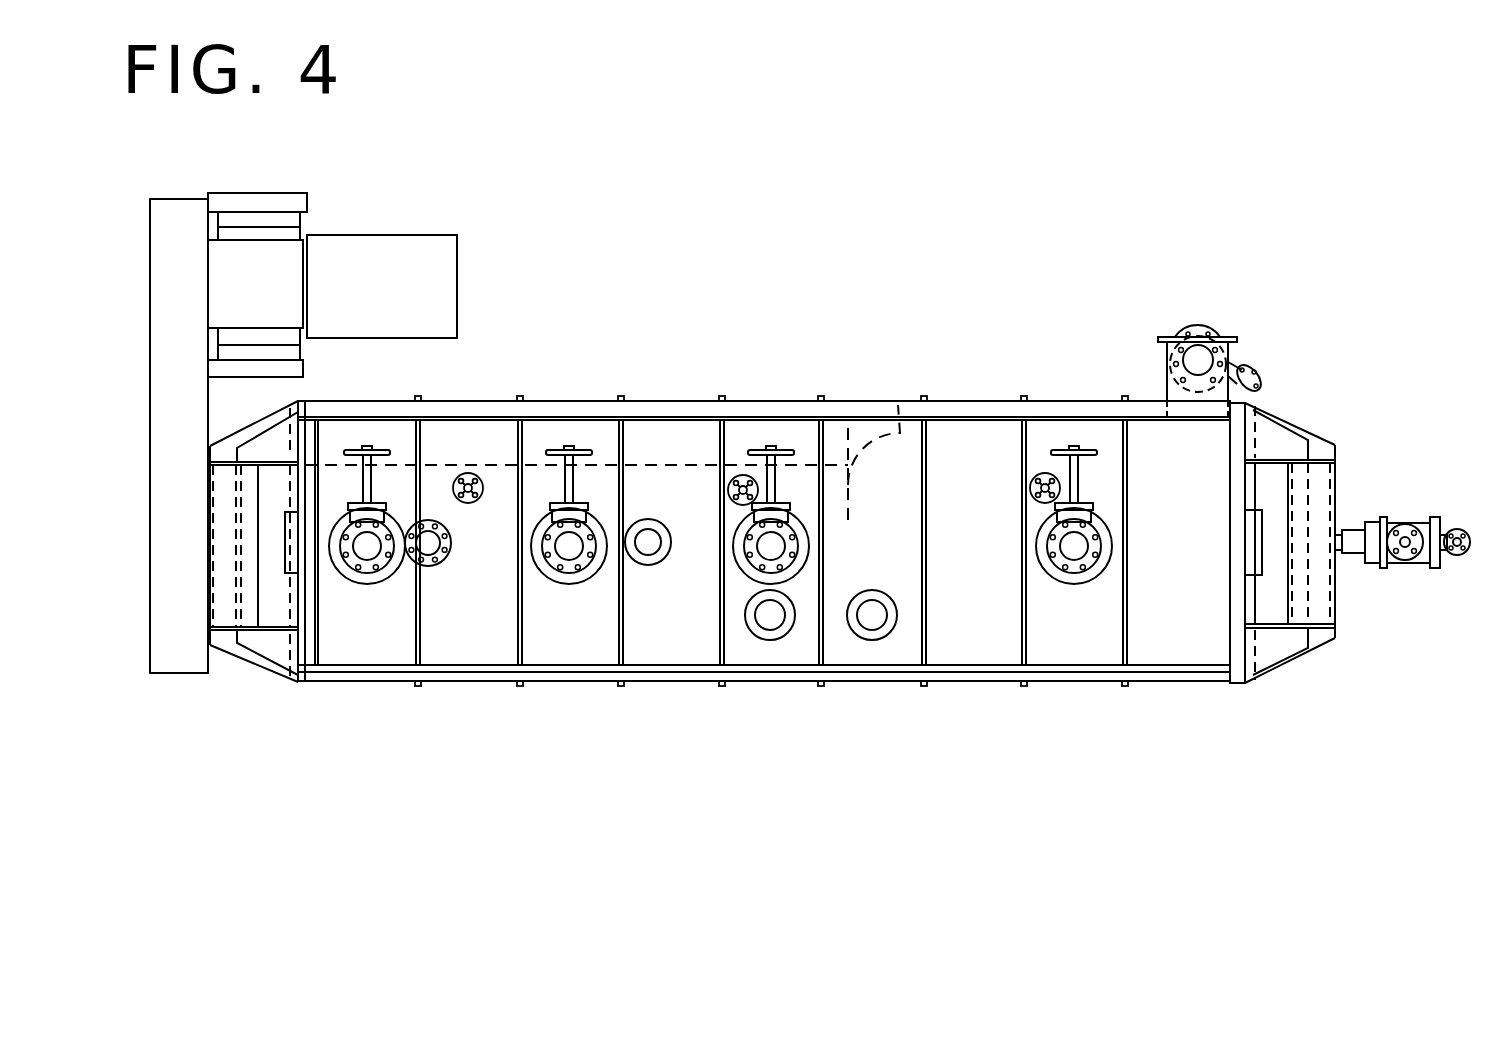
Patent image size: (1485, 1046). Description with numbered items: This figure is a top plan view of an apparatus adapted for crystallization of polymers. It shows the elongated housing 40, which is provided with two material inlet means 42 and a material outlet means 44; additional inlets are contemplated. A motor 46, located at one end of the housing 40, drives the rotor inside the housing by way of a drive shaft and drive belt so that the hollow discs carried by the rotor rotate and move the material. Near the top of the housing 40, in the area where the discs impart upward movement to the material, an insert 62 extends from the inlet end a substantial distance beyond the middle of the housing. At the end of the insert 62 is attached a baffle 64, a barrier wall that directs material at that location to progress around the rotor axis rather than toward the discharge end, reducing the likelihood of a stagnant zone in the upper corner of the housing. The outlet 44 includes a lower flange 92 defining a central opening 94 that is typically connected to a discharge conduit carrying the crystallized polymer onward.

The housing 40 is at (362, 688).
The material inlet means 42 is at (445, 563).
The material outlet means 44 is at (1166, 380).
The motor 46 is at (423, 255).
The insert 62 is at (663, 442).
The baffle 64 is at (898, 405).
The lower flange 92 is at (1203, 328).
The central opening 94 is at (1222, 360).